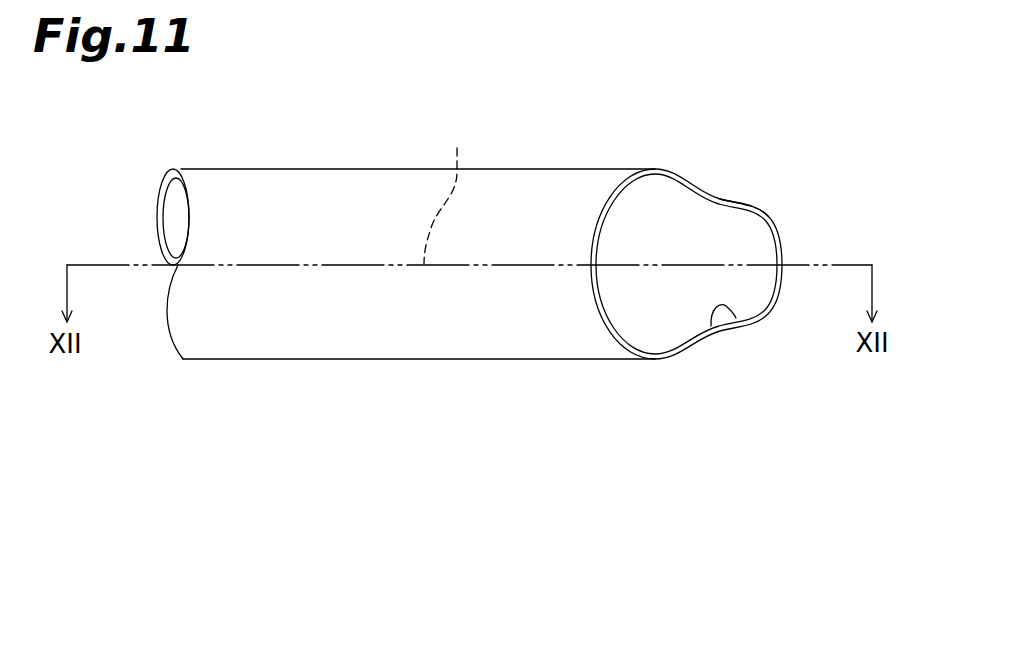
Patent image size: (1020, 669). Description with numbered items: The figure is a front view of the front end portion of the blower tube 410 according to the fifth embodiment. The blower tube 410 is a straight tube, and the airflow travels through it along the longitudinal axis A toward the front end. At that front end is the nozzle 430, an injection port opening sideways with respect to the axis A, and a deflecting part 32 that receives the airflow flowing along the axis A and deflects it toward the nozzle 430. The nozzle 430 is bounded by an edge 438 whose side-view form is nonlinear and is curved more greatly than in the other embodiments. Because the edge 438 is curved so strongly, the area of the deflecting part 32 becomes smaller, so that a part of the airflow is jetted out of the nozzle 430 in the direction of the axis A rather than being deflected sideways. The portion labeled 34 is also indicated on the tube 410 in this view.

The blower tube 410 is at (542, 153).
The straight tube portion 34 is at (348, 169).
The deflecting part 32 is at (775, 307).
The edge 438 is at (738, 200).
The nozzle 430 is at (735, 318).
The longitudinal axis A is at (445, 191).